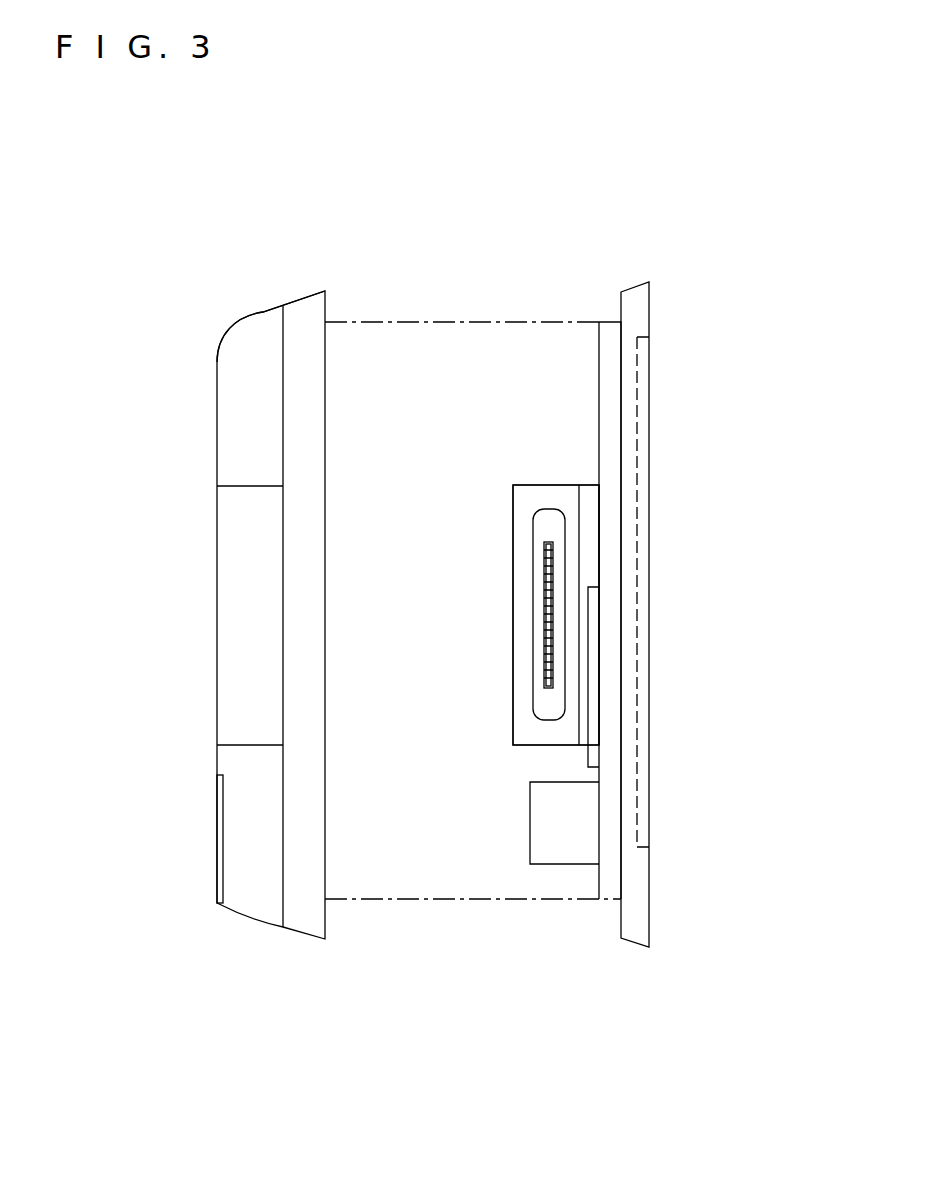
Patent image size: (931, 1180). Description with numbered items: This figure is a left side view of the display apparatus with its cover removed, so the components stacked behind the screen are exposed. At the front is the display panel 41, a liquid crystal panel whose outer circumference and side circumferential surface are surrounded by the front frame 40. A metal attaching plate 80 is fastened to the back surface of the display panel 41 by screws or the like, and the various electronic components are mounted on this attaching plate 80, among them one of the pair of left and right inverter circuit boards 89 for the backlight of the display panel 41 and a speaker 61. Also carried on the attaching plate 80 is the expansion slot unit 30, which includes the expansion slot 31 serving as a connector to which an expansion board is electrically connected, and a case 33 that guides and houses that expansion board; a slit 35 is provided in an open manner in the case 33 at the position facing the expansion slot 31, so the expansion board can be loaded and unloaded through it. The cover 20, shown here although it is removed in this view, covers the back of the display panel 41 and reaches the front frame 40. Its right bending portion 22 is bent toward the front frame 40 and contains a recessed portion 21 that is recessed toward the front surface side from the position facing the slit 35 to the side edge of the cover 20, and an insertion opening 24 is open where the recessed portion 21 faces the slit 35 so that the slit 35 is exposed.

The cover 20 is at (186, 447).
The recessed portion 21 is at (283, 682).
The bending portion 22 is at (246, 340).
The insertion opening 24 is at (237, 612).
The expansion slot unit 30 is at (498, 629).
The expansion slot 31 is at (553, 560).
The case 33 is at (513, 514).
The slit 35 is at (551, 521).
The front frame 40 is at (627, 956).
The display panel 41 is at (649, 758).
The speaker 61 is at (535, 843).
The attaching plate 80 is at (608, 333).
The inverter circuit board 89 is at (597, 672).